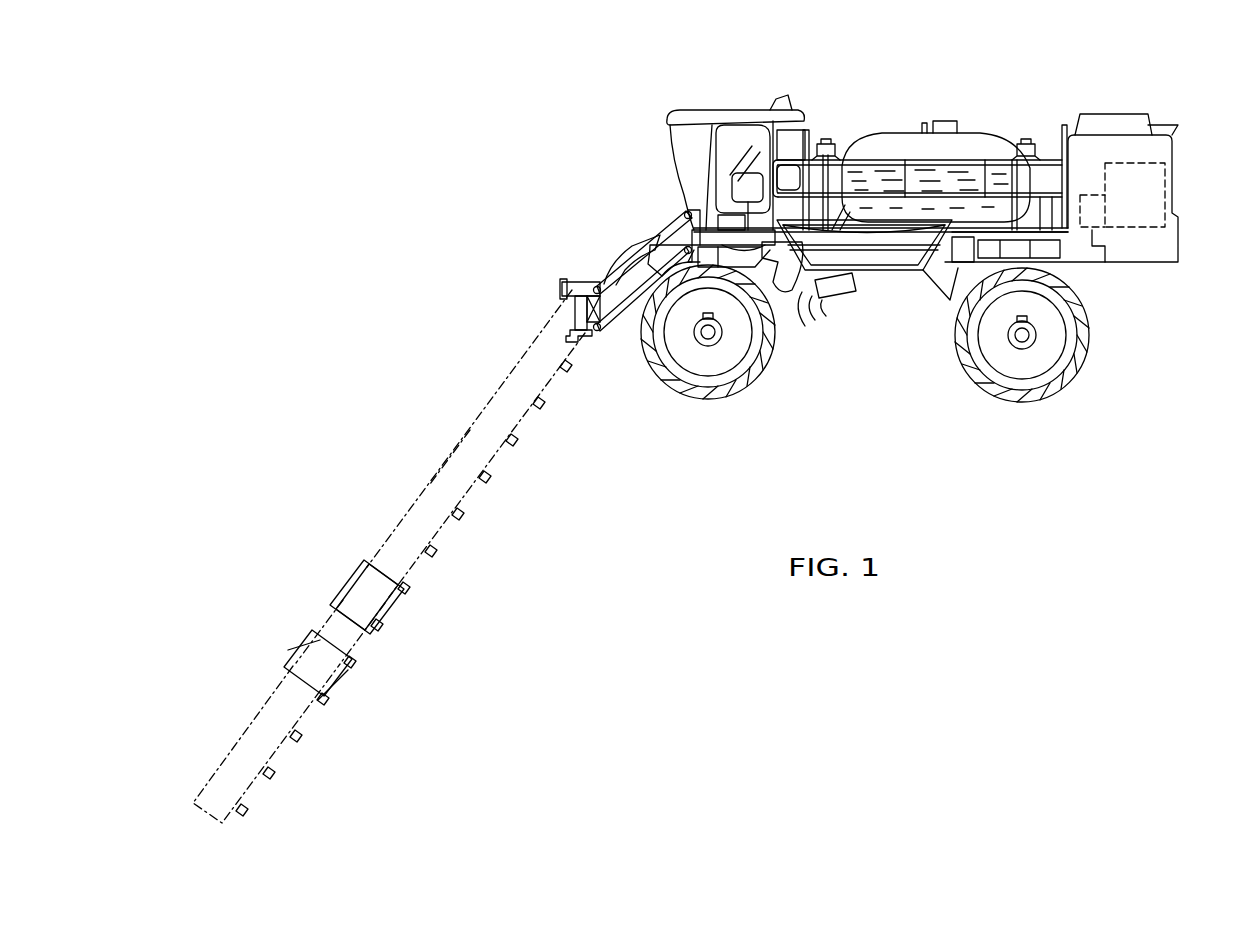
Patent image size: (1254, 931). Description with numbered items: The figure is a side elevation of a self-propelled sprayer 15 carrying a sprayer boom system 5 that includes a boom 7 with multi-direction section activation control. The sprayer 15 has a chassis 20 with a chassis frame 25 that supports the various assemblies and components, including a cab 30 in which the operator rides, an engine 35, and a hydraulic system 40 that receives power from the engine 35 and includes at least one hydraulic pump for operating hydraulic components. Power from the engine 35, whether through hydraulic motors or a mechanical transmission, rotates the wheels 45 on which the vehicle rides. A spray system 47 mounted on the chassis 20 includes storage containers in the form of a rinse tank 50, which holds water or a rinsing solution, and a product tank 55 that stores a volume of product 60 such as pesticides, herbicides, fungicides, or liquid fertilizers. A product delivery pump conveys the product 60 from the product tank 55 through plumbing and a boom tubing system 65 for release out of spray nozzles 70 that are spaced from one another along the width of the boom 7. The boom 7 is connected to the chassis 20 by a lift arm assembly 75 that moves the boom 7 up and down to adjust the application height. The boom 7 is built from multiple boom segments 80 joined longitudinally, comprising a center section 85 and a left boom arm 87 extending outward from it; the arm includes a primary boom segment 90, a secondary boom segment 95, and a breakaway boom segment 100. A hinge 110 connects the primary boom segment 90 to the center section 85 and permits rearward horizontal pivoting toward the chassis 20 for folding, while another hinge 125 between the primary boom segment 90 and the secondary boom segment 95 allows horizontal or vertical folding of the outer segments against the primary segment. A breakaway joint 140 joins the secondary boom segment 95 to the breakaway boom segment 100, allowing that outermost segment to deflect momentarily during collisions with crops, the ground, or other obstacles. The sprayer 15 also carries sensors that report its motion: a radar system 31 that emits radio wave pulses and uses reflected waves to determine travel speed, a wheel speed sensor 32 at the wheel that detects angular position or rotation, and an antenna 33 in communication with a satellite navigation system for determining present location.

The sprayer boom system 5 is at (322, 410).
The boom 7 is at (450, 483).
The self-propelled sprayer 15 is at (927, 85).
The chassis 20 is at (880, 275).
The chassis frame 25 is at (935, 270).
The cab 30 is at (742, 108).
The radar system 31 is at (828, 305).
The wheel speed sensor 32 is at (715, 318).
The antenna 33 is at (782, 100).
The engine 35 is at (1145, 180).
The hydraulic system 40 is at (1087, 205).
The wheels 45 is at (742, 388).
The spray system 47 is at (993, 122).
The rinse tank 50 is at (1027, 143).
The product tank 55 is at (893, 127).
The product 60 is at (865, 175).
The boom tubing system 65 is at (513, 443).
The spray nozzles 70 is at (458, 513).
The lift arm assembly 75 is at (656, 225).
The boom segments 80 is at (408, 408).
The center section 85 is at (577, 262).
The left boom arm 87 is at (545, 570).
The primary boom segment 90 is at (456, 405).
The secondary boom segment 95 is at (332, 585).
The breakaway boom segment 100 is at (258, 710).
The hinge 110 is at (572, 313).
The hinge 125 is at (395, 612).
The breakaway joint 140 is at (340, 690).